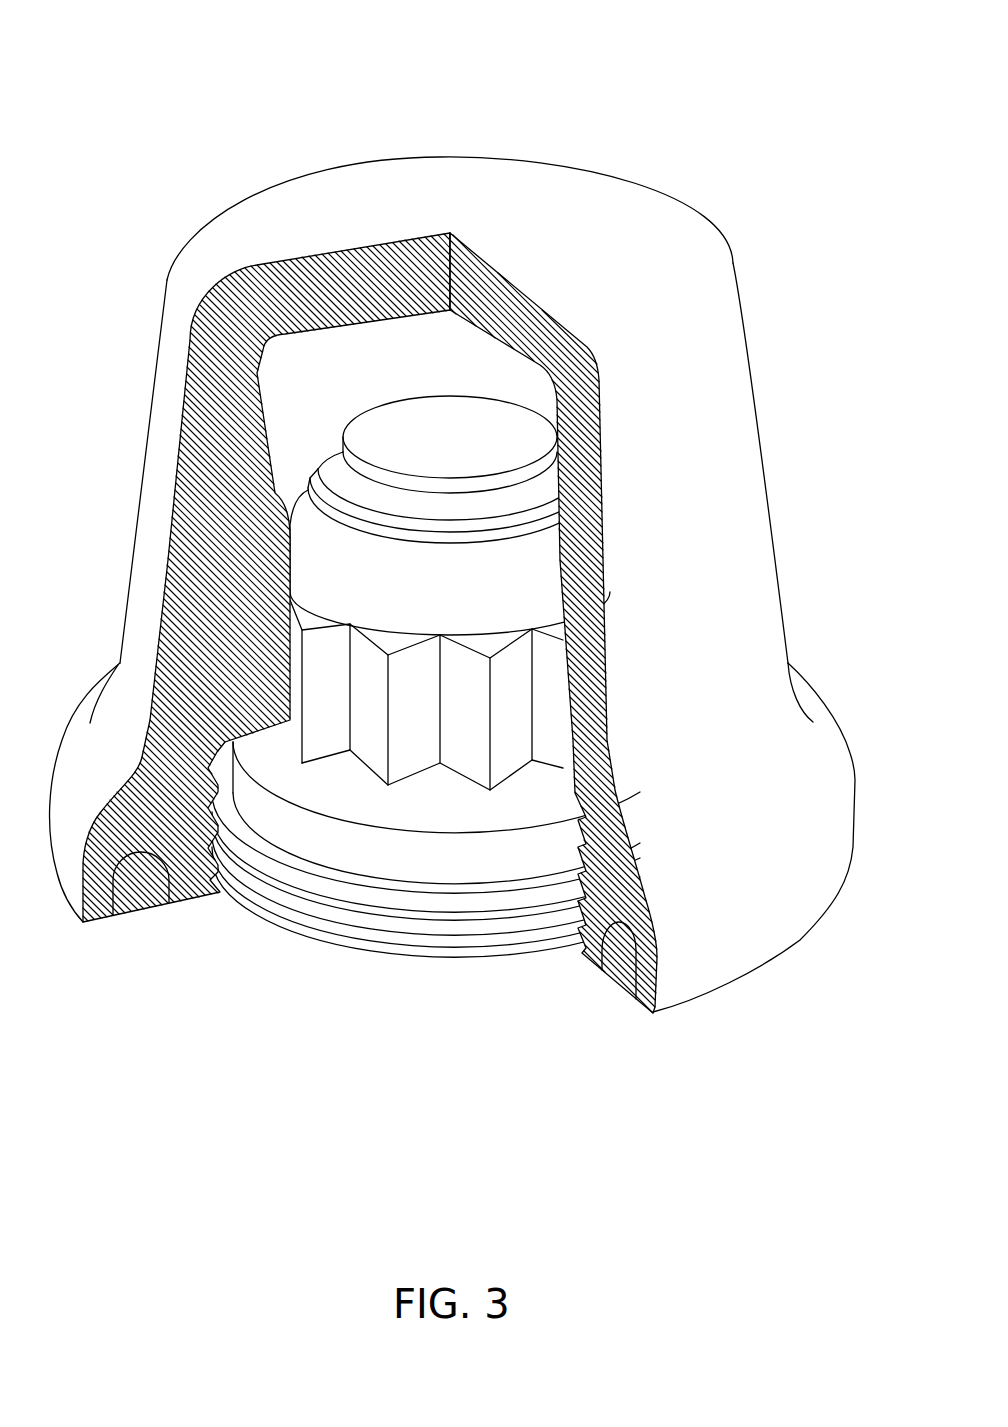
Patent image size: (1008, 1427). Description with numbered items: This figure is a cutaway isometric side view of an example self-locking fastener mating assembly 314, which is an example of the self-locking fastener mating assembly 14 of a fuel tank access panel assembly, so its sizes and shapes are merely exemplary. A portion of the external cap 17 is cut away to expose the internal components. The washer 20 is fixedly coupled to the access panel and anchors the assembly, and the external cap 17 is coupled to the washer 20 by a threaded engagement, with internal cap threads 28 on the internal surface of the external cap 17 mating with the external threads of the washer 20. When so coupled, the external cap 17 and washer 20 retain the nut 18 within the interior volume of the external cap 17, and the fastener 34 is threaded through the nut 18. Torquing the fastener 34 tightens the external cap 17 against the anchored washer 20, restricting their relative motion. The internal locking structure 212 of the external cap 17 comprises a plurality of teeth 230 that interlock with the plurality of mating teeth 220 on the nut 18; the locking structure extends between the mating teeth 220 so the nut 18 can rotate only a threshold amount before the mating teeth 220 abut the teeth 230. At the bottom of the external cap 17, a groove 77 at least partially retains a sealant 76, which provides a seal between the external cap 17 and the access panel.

The self-locking fastener mating assembly 14 is at (190, 57).
The self-locking fastener mating assembly 314 is at (220, 140).
The external cap 17 is at (733, 263).
The fastener 34 is at (452, 417).
The nut 18 is at (285, 465).
The internal locking structure 212 is at (297, 588).
The plurality of teeth 230 is at (293, 617).
The plurality of mating teeth 220 is at (320, 695).
The washer 20 is at (425, 933).
The internal cap threads 28 is at (317, 880).
The sealant 76 is at (153, 897).
The groove 77 is at (120, 895).